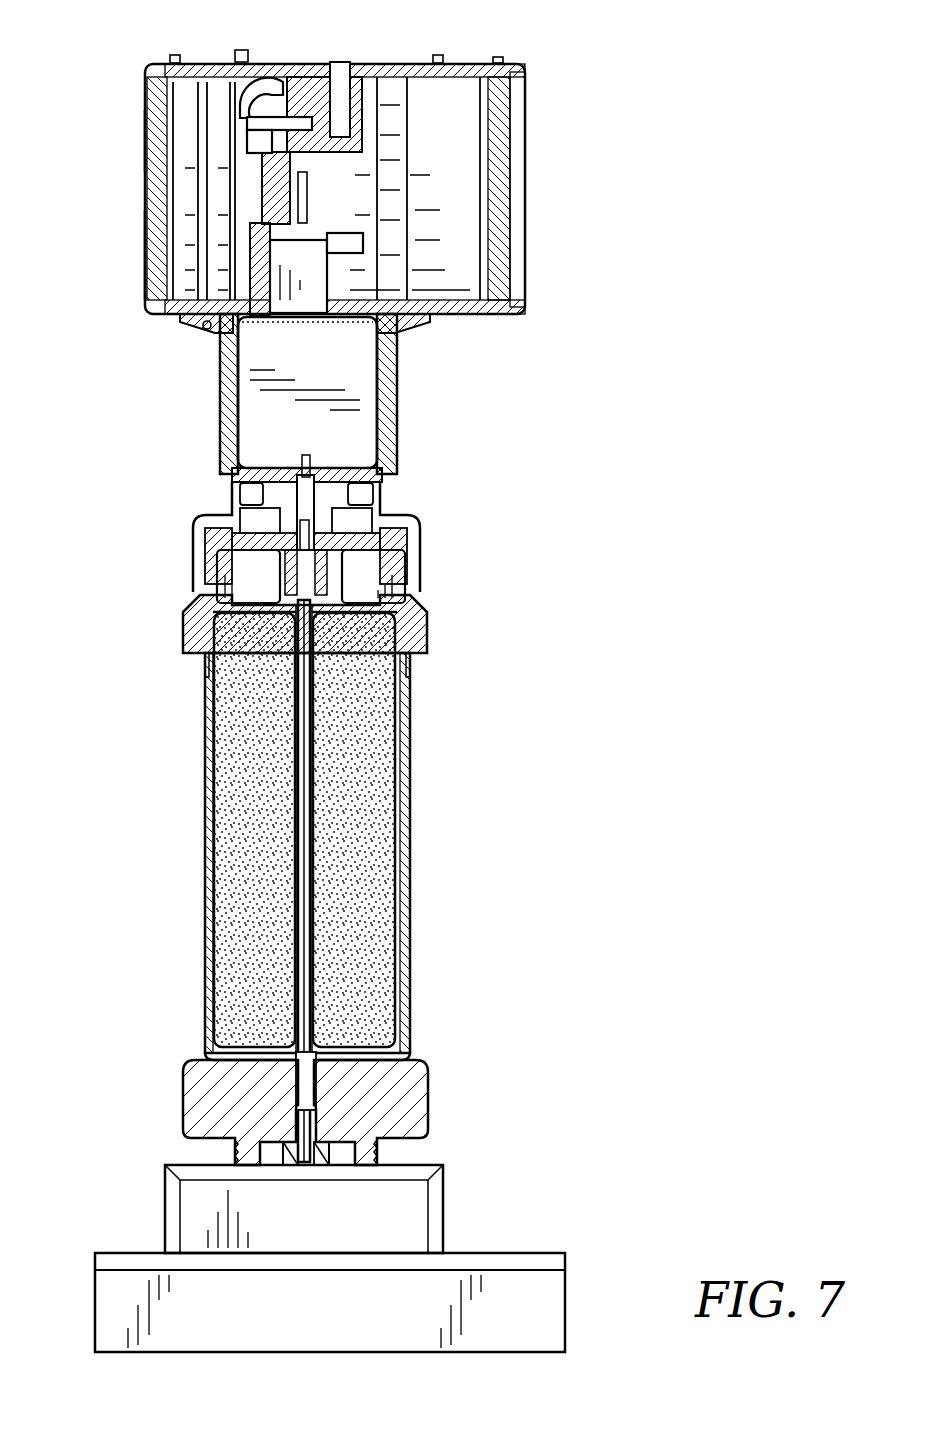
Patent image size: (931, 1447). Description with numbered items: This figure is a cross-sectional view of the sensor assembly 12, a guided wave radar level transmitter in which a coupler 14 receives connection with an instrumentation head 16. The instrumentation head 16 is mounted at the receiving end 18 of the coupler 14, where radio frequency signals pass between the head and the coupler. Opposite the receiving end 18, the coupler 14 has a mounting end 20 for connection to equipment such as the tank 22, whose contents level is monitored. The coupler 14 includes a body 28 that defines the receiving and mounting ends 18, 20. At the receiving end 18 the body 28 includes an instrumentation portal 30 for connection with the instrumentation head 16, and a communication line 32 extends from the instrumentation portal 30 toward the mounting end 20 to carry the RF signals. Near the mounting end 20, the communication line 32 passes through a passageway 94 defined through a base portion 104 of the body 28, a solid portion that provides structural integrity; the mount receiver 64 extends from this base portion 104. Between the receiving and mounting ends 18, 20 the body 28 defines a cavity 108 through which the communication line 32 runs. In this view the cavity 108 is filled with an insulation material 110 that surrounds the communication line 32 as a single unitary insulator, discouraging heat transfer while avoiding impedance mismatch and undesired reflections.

The sensor assembly 12 is at (86, 112).
The coupler 14 is at (567, 648).
The instrumentation head 16 is at (556, 170).
The receiving end 18 is at (441, 557).
The mounting end 20 is at (452, 1156).
The tank 22 is at (543, 1226).
The body 28 is at (433, 888).
The instrumentation portal 30 is at (346, 474).
The communication line 32 is at (318, 829).
The mount receiver 64 is at (395, 1152).
The passageway 94 is at (316, 1074).
The base portion 104 is at (397, 1108).
The cavity 108 is at (243, 720).
The insulation material 110 is at (346, 727).